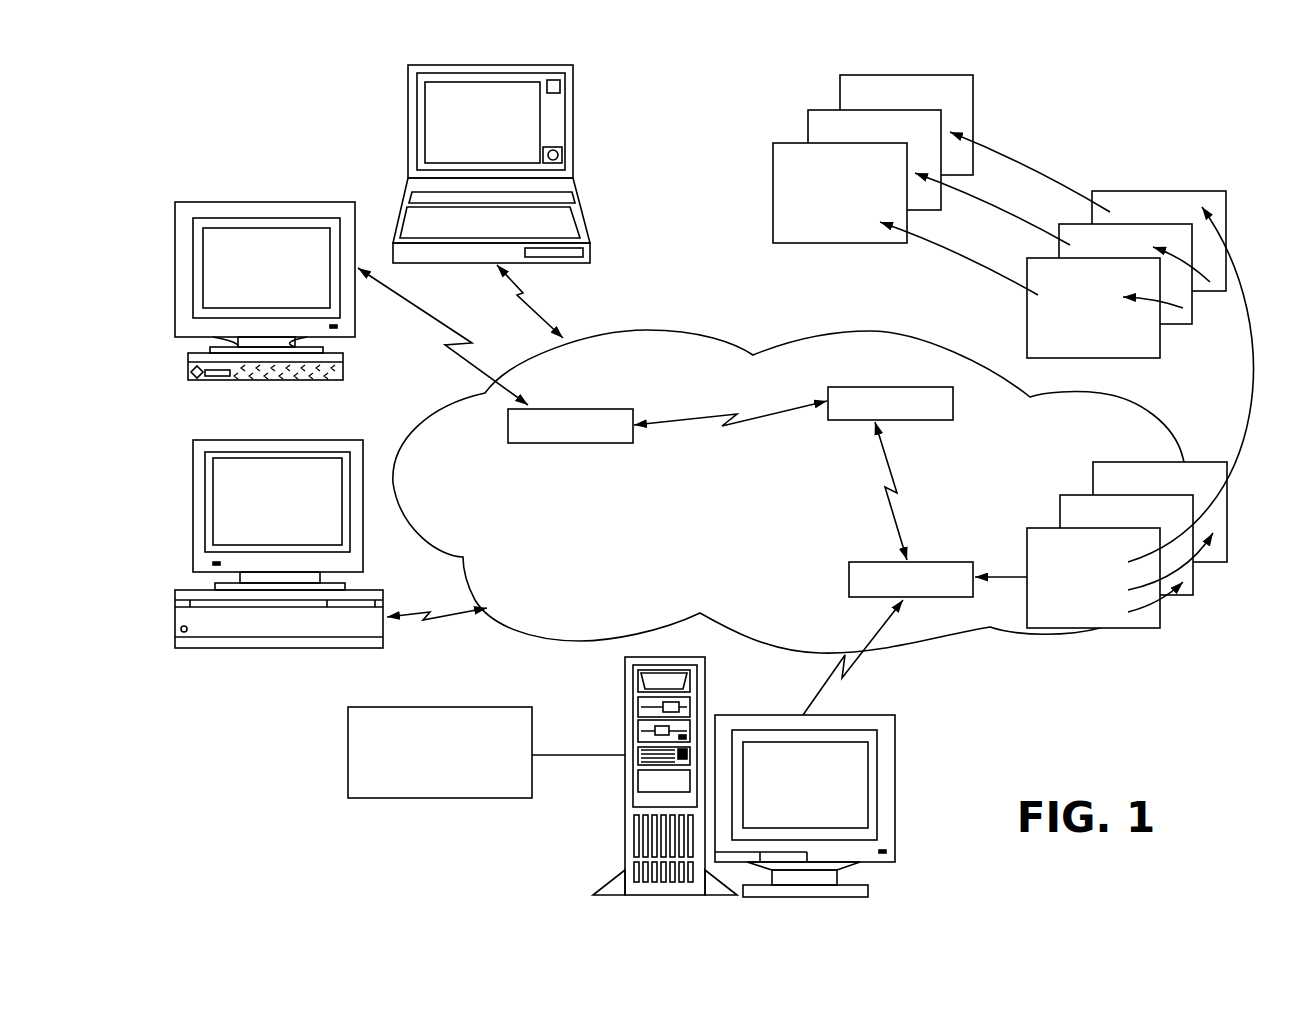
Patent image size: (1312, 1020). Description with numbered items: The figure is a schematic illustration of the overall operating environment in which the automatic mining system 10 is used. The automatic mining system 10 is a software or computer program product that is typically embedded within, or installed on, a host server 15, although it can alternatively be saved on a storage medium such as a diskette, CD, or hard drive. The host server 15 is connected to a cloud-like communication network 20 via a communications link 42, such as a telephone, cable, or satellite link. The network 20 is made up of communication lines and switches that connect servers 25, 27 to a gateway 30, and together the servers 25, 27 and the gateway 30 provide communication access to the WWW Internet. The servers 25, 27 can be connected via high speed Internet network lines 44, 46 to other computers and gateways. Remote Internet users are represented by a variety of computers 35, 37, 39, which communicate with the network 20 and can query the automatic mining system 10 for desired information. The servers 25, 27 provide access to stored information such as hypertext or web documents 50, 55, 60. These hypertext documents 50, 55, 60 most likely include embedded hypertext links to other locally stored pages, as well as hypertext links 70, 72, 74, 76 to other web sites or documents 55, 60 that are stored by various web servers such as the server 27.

The automatic mining system 10 is at (347, 747).
The host server 15 is at (623, 700).
The communication network 20 is at (687, 335).
The server 25 is at (888, 562).
The server 27 is at (903, 387).
The gateway 30 is at (563, 445).
The computer 35 is at (585, 213).
The computer 37 is at (327, 202).
The computer 39 is at (327, 440).
The communication link 42 is at (821, 690).
The high speed Internet network line 44 is at (900, 527).
The high speed Internet network line 46 is at (718, 415).
The hypertext documents 50 is at (1238, 532).
The hypertext documents 55 is at (1240, 215).
The hypertext documents 60 is at (790, 128).
The hypertext link 70 is at (1262, 380).
The hypertext link 72 is at (1046, 178).
The hypertext link 74 is at (1012, 218).
The hypertext link 76 is at (966, 260).